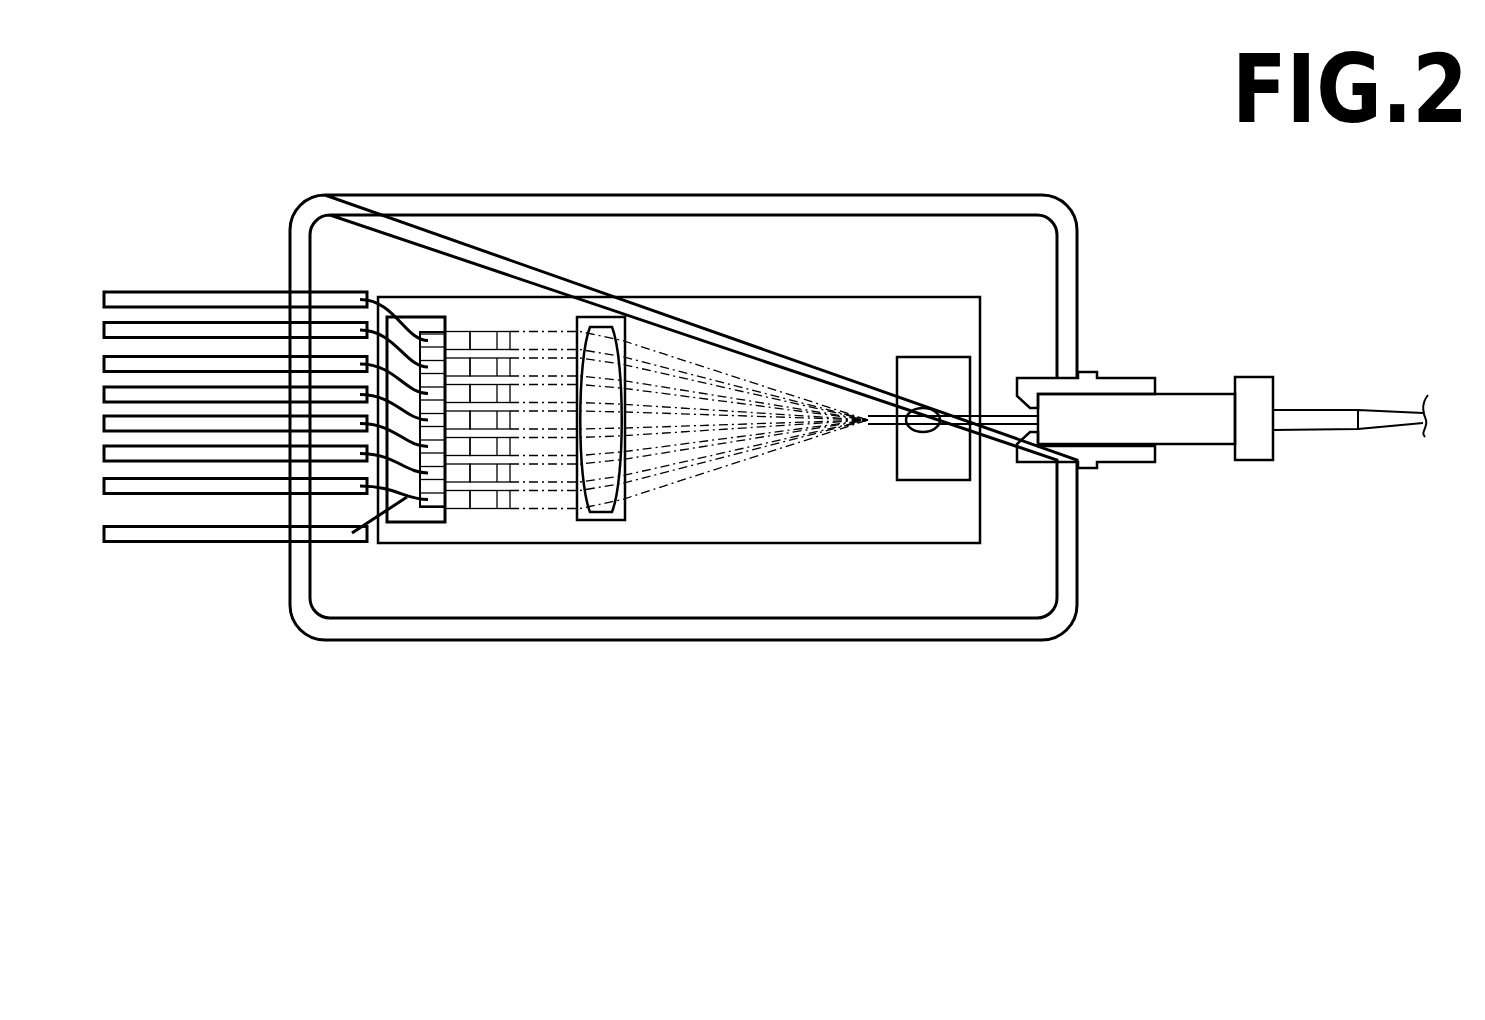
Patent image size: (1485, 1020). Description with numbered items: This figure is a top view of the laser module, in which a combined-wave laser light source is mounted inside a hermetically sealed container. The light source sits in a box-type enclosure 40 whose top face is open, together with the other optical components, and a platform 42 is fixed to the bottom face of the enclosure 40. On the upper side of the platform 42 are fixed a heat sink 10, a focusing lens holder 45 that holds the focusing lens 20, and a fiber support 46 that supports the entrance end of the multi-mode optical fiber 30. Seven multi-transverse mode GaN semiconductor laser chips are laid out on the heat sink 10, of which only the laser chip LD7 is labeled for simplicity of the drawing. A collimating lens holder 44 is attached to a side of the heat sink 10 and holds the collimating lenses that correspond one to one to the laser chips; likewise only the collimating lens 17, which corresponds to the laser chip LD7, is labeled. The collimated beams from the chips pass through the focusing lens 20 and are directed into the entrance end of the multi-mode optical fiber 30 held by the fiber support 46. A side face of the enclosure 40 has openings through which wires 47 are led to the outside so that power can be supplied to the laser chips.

The wires 47 is at (174, 276).
The box-type enclosure 40 is at (815, 196).
The platform 42 is at (890, 322).
The multi-mode optical fiber 30 is at (998, 410).
The collimating lens holder 44 is at (455, 512).
The heat sink 10 is at (405, 518).
The laser chip LD7 is at (438, 507).
The collimating lens 17 is at (500, 500).
The focusing lens 20 is at (622, 470).
The focusing lens holder 45 is at (607, 520).
The fiber support 46 is at (930, 470).